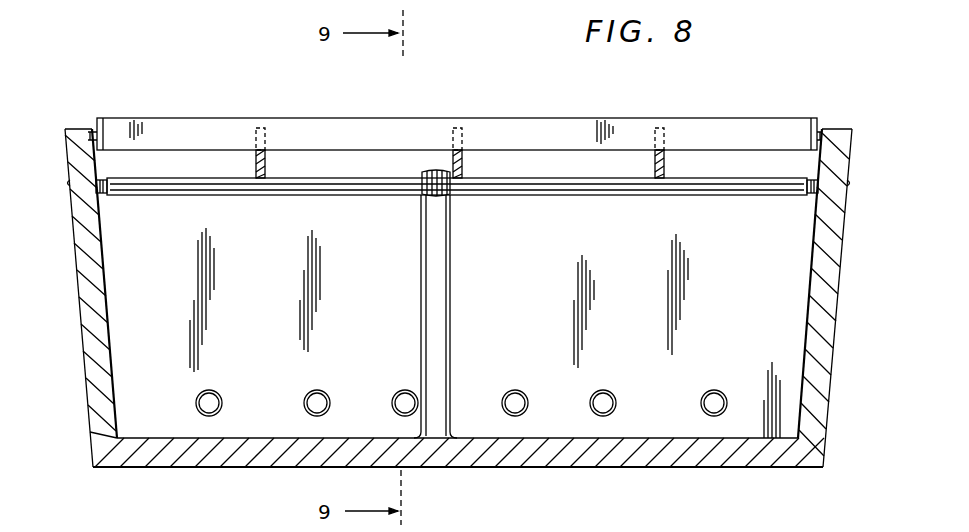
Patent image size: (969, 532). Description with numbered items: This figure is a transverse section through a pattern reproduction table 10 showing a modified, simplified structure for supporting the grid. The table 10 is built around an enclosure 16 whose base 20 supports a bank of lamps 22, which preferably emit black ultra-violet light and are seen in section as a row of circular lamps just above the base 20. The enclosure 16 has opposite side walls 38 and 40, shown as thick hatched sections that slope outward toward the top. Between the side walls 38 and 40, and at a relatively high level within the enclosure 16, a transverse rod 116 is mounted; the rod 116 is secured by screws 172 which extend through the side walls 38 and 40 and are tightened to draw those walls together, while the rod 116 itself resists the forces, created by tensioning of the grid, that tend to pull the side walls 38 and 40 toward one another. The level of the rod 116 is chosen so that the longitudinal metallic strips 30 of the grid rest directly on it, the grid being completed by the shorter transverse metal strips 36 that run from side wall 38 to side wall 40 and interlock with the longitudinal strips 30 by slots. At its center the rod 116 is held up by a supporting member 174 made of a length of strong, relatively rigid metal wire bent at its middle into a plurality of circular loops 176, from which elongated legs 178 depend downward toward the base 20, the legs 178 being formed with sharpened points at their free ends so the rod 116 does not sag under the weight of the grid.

The pattern reproduction table 10 is at (73, 378).
The enclosure 16 is at (74, 268).
The base 20 is at (596, 468).
The lamps 22 is at (698, 398).
The longitudinal metallic strips 30 is at (265, 150).
The transverse metal strips 36 is at (222, 130).
The side wall 38 is at (110, 343).
The side wall 40 is at (806, 340).
The transverse rods 116 is at (592, 188).
The screws 172 is at (102, 195).
The supporting member 174 is at (451, 321).
The circular loops 176 is at (422, 172).
The legs 178 is at (421, 286).